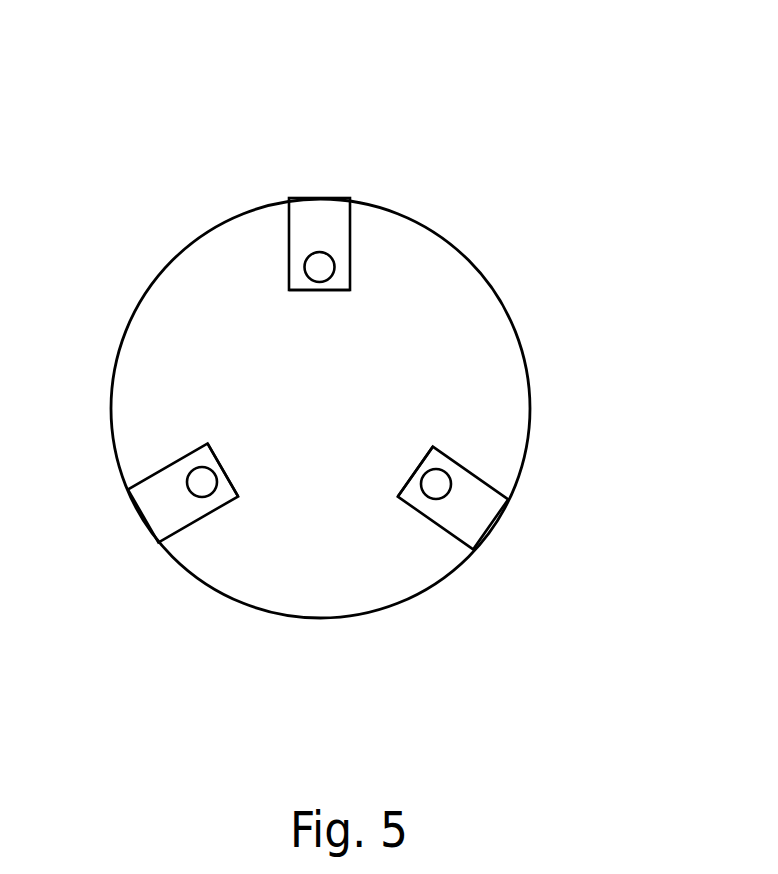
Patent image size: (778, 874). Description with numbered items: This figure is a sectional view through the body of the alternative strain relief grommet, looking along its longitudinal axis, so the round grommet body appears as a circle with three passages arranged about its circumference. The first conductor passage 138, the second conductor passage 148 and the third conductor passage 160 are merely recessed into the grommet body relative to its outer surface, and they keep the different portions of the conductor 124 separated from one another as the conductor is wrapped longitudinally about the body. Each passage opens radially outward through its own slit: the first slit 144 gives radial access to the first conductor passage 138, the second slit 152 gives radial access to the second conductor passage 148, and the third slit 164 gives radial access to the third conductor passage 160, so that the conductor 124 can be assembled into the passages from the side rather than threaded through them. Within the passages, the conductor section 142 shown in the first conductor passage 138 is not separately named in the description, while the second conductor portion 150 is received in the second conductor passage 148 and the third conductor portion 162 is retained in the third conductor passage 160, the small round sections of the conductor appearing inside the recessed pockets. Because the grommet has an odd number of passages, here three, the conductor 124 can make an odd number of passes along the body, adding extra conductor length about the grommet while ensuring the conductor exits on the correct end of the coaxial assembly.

The conductor 124 is at (565, 150).
The first conductor passage 138 is at (318, 293).
The pin hole 142 is at (334, 265).
The first slit 144 is at (312, 197).
The second conductor passage 148 is at (430, 457).
The second conductor portion 150 is at (437, 482).
The second slit 152 is at (470, 510).
The third conductor passage 160 is at (230, 474).
The third conductor portion 162 is at (205, 485).
The third slit 164 is at (157, 500).